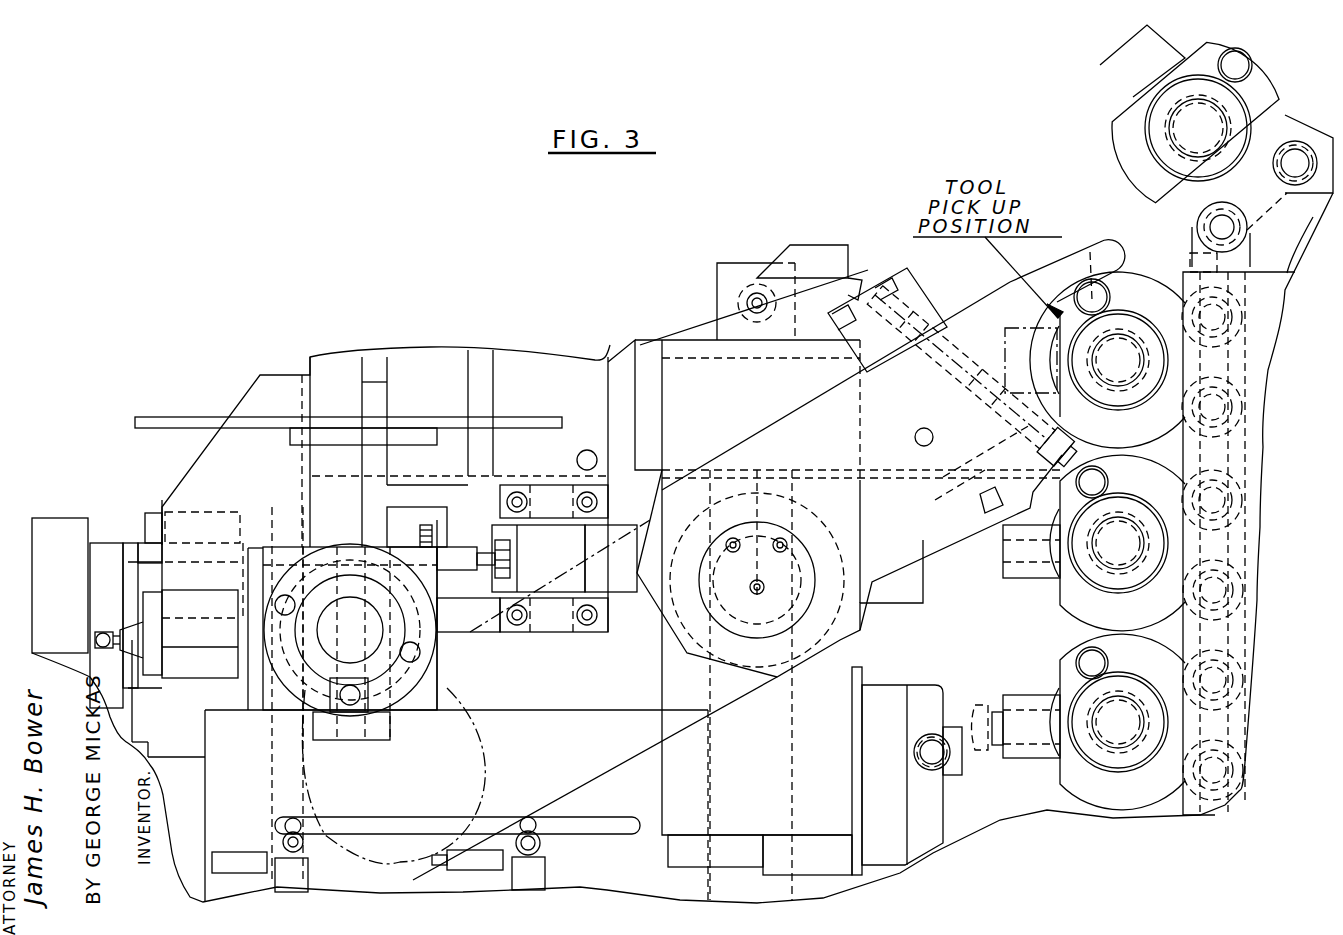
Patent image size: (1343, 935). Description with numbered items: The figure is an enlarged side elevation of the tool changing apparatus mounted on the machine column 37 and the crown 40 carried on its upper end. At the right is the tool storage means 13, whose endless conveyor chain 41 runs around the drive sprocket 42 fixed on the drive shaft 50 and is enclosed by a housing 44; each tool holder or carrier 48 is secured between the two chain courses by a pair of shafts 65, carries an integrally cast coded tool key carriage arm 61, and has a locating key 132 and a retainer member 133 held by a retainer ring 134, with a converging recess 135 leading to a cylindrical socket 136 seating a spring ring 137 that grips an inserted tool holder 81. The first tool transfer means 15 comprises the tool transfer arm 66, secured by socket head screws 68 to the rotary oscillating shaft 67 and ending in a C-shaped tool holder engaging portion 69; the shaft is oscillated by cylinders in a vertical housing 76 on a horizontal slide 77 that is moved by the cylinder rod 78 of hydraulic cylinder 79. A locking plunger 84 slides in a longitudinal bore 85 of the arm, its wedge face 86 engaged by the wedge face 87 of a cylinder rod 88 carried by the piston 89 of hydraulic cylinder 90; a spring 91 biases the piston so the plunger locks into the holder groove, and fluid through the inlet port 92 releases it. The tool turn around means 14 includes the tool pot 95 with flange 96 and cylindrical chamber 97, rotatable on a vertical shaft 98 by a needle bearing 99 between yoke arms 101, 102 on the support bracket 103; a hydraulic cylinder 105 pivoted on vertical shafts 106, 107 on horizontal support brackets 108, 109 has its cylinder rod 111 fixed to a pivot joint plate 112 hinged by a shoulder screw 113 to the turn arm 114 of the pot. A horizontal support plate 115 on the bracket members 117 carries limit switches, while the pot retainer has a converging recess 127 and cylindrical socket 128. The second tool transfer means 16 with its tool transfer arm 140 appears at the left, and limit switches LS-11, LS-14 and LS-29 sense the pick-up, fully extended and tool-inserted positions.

The tool storage means 13 is at (1300, 268).
The 90° tool turn around means 14 is at (278, 506).
The first tool transfer means 15 is at (740, 447).
The second tool transfer means 16 is at (72, 520).
The machine column 37 is at (628, 875).
The crown 40 is at (615, 355).
The conveyor chain 41 is at (1190, 260).
The drive sprocket 42 is at (1295, 220).
The housing 44 is at (1262, 463).
The tool holder 48 is at (1138, 427).
The drive shaft 50 is at (1296, 338).
The coded tool key carriage arm 61 is at (1065, 388).
The shafts 65 is at (1238, 502).
The tool transfer arm 66 is at (843, 393).
The rotary oscillating shaft 67 is at (762, 520).
The socket head screws 68 is at (765, 584).
The C-shaped tool holder engaging portion 69 is at (488, 762).
The vertical housing 76 is at (863, 280).
The horizontal slide 77 is at (822, 255).
The cylinder rod 78 is at (740, 300).
The hydraulic cylinder 79 is at (748, 275).
The tool holder 81 is at (292, 560).
The locking plunger 84 is at (1067, 423).
The longitudinal bore 85 is at (1020, 430).
The wedge face 86 is at (1040, 440).
The wedge face 87 is at (969, 503).
The cylinder rod 88 is at (961, 463).
The piston 89 is at (935, 385).
The hydraulic cylinder 90 is at (922, 292).
The spring 91 is at (935, 310).
The fluid inlet port 92 is at (920, 445).
The tool pot 95 is at (275, 720).
The flange 96 is at (380, 718).
The cylindrical chamber 97 is at (378, 680).
The vertical shaft 98 is at (345, 525).
The needle bearing 99 is at (372, 740).
The yoke arm 101 is at (333, 742).
The yoke arm 102 is at (375, 542).
The support bracket 103 is at (518, 368).
The hydraulic cylinder 105 is at (636, 598).
The vertical shaft 106 is at (548, 482).
The vertical shaft 107 is at (558, 632).
The horizontal support bracket 108 is at (598, 503).
The horizontal support bracket 109 is at (522, 632).
The cylinder rod 111 is at (503, 560).
The pivot joint plate 112 is at (447, 565).
The shoulder screw 113 is at (435, 535).
The turn arm 114 is at (468, 615).
The horizontal support plate 115 is at (534, 422).
The support bracket members 117 is at (372, 400).
The converging recess 127 is at (322, 605).
The cylindrical socket 128 is at (380, 630).
The locating key 132 is at (1098, 483).
The retainer member 133 is at (1172, 153).
The retainer ring 134 is at (1145, 125).
The converging recess 135 is at (1195, 145).
The cylindrical socket 136 is at (1185, 150).
The spring ring 137 is at (1230, 92).
The tool transfer arm 140 is at (46, 535).
The limit switch LS-11 is at (530, 872).
The limit switch LS-14 is at (290, 887).
The limit switch LS-29 is at (150, 670).